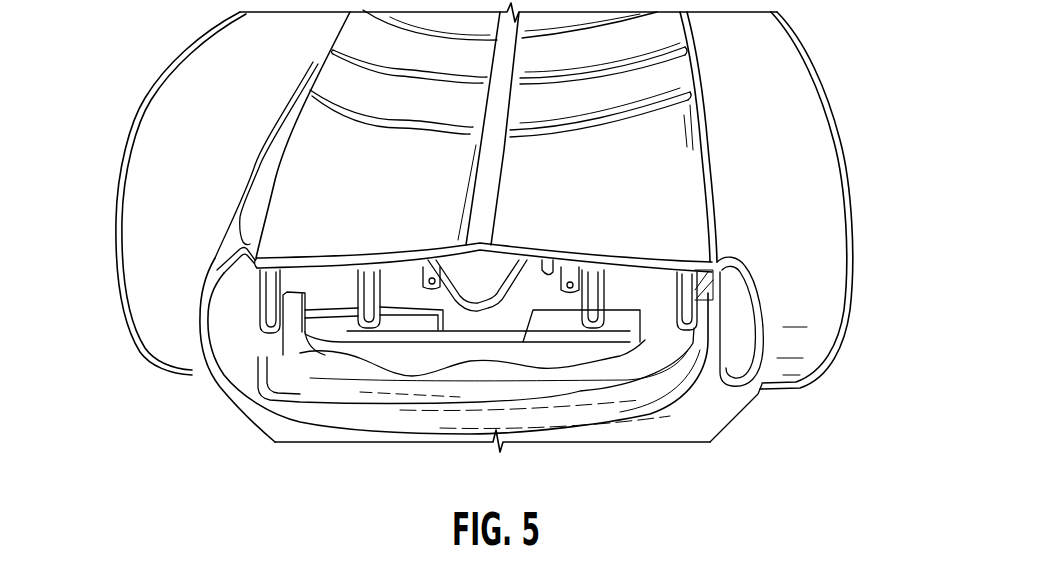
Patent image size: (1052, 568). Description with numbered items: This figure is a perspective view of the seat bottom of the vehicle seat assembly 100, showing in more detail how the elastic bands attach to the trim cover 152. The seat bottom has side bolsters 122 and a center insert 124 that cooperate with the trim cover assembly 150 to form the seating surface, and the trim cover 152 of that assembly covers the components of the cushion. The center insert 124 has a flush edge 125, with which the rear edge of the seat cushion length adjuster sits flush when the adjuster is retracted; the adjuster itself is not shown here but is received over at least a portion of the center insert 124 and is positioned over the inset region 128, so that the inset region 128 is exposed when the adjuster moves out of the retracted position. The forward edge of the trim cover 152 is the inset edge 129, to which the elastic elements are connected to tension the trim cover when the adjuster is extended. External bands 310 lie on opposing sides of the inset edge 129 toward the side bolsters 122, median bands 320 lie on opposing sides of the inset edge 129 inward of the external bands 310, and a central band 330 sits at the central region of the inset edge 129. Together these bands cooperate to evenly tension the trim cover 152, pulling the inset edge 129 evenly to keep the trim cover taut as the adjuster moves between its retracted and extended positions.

The seat assembly 100 is at (96, 124).
The side bolsters 122 is at (769, 150).
The center insert 124 is at (652, 91).
The flush edge 125 is at (700, 133).
The inset region 128 is at (648, 196).
The trim cover 152 is at (684, 224).
The inset edge 129 is at (730, 275).
The external bands 310 is at (246, 314).
The median bands 320 is at (351, 305).
The central band 330 is at (461, 327).
The trim cover assembly 150 is at (315, 120).